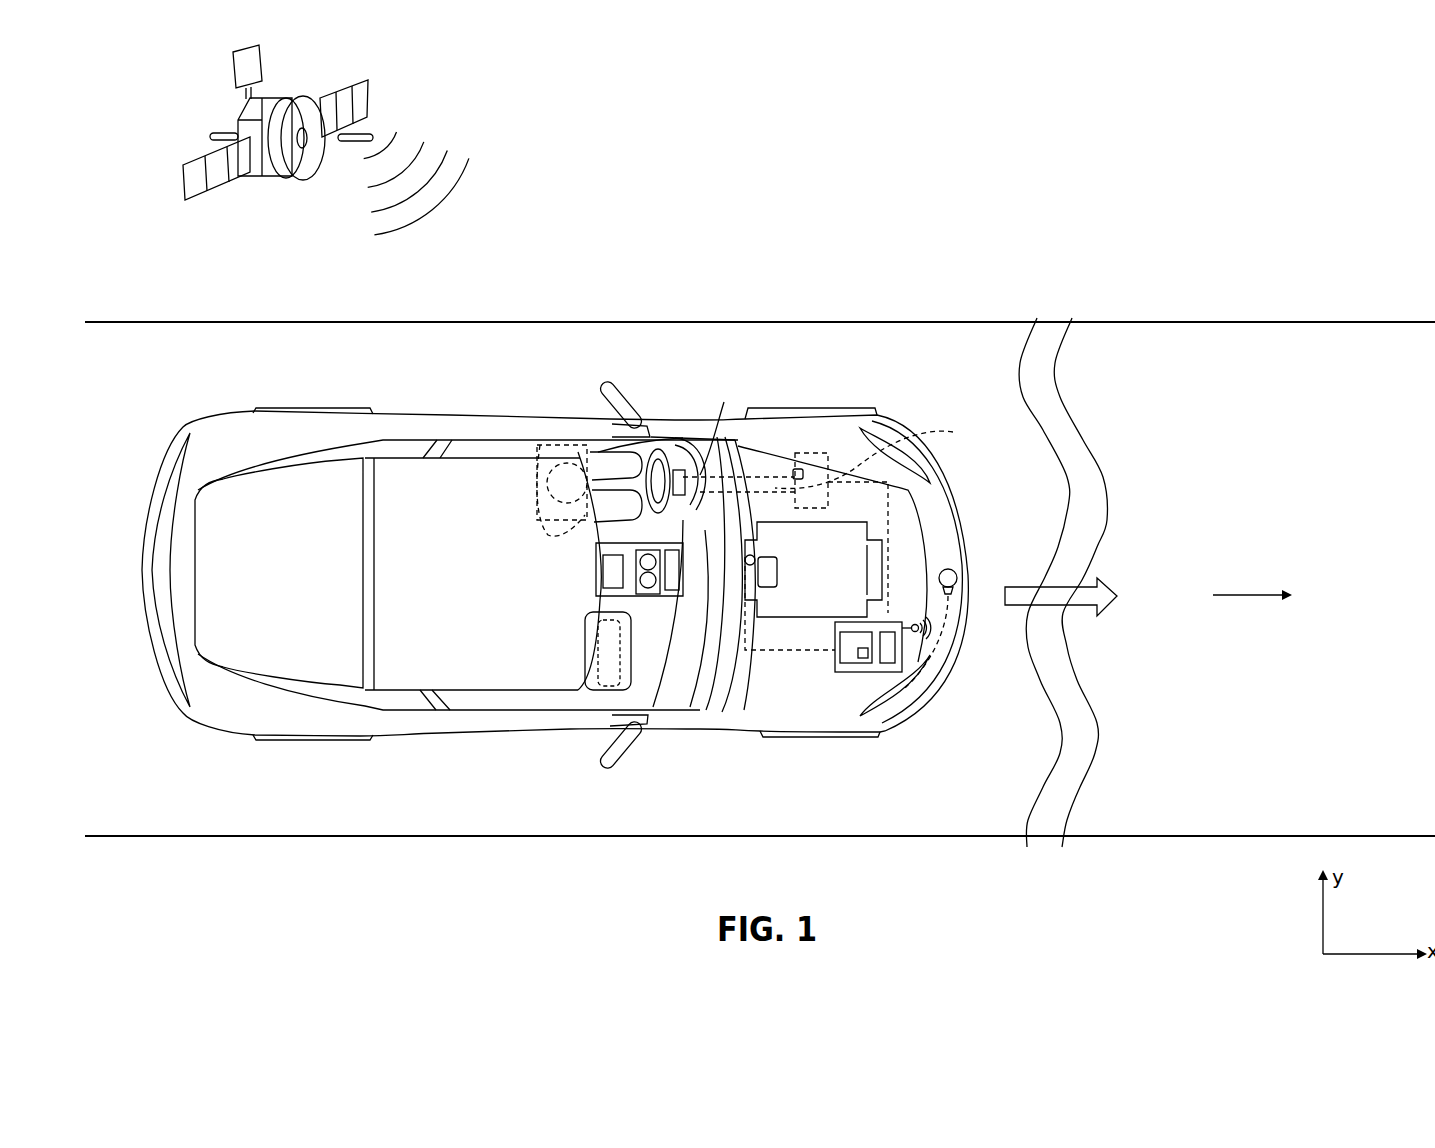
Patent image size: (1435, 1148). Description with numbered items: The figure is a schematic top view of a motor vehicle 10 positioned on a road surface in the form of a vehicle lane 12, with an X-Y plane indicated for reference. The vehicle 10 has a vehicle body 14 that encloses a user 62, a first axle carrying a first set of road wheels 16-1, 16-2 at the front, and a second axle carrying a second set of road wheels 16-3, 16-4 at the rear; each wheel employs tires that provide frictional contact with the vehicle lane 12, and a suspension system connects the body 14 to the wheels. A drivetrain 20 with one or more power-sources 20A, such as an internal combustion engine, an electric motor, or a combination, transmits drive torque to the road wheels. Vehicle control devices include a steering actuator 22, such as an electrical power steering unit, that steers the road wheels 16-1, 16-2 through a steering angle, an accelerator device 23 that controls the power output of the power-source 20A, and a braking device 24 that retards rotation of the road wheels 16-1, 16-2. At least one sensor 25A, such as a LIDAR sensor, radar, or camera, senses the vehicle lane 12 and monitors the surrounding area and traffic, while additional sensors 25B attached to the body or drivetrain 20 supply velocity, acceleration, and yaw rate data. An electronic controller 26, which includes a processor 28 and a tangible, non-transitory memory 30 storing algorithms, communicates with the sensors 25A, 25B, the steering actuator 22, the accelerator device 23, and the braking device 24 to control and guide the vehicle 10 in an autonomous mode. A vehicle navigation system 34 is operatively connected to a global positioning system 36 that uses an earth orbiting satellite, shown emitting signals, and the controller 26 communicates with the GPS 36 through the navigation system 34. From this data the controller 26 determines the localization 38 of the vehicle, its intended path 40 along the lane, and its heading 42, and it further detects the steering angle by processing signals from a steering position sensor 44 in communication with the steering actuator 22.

The motor vehicle 10 is at (575, 388).
The vehicle lane 12 is at (118, 364).
The vehicle body 14 is at (690, 417).
The road wheel 16-1 is at (860, 411).
The road wheel 16-2 is at (773, 737).
The road wheel 16-3 is at (293, 408).
The road wheel 16-4 is at (313, 740).
The drivetrain 20 is at (877, 608).
The power-source 20A is at (836, 580).
The steering actuator 22 is at (877, 455).
The accelerator device 23 is at (720, 505).
The braking device 24 is at (669, 440).
The sensor 25A is at (957, 580).
The sensor 25B is at (746, 563).
The electronic controller 26 is at (893, 660).
The processor 28 is at (863, 663).
The memory 30 is at (903, 658).
The vehicle navigation system 34 is at (650, 712).
The global positioning system 36 is at (374, 100).
The localization 38 is at (868, 656).
The intended path 40 is at (1255, 593).
The heading 42 is at (1055, 612).
The steering position sensor 44 is at (803, 455).
The user 62 is at (557, 440).